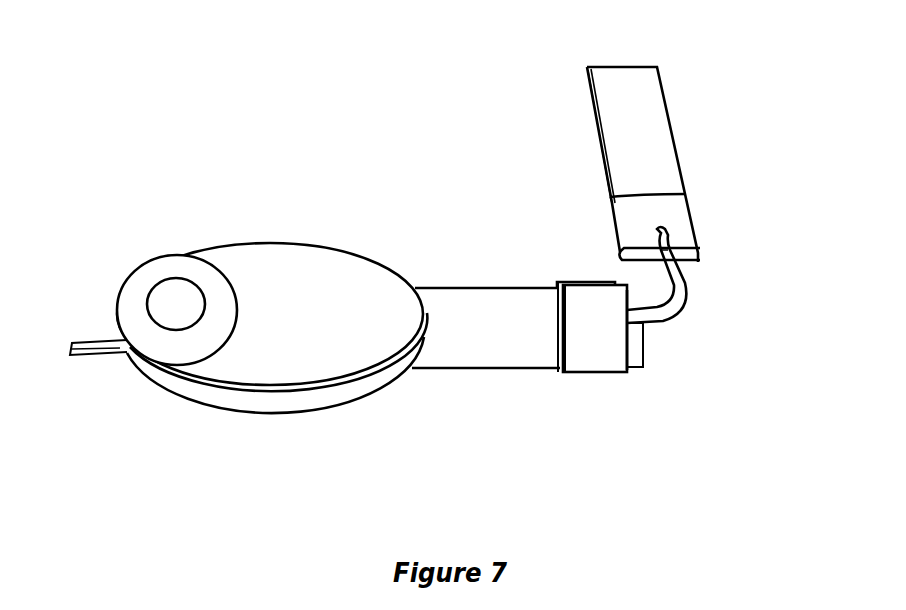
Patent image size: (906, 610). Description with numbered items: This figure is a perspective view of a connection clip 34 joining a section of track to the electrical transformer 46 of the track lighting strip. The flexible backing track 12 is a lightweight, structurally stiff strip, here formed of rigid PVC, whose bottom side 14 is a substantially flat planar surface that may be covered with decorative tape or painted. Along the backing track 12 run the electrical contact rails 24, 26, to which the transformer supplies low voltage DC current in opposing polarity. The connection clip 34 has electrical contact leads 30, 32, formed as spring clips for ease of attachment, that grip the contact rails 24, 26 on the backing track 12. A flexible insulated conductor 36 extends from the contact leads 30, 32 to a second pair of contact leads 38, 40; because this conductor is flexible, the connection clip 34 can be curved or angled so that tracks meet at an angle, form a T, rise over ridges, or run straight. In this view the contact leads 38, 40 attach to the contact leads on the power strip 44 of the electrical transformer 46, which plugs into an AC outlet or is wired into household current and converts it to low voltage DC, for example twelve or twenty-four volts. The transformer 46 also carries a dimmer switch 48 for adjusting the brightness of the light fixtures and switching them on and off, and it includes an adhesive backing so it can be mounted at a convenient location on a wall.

The flexible backing track 12 is at (652, 140).
The bottom side 14 is at (635, 80).
The electrical contact rail 24 is at (698, 263).
The electrical contact rail 26 is at (597, 133).
The electrical contact lead 30 is at (700, 255).
The electrical contact lead 32 is at (605, 208).
The connection clip 34 is at (608, 363).
The flexible insulated conductor 36 is at (678, 315).
The contact lead 38 is at (577, 375).
The contact lead 40 is at (555, 277).
The power strip 44 is at (468, 342).
The electrical transformer 46 is at (225, 408).
The dimmer switch 48 is at (172, 300).